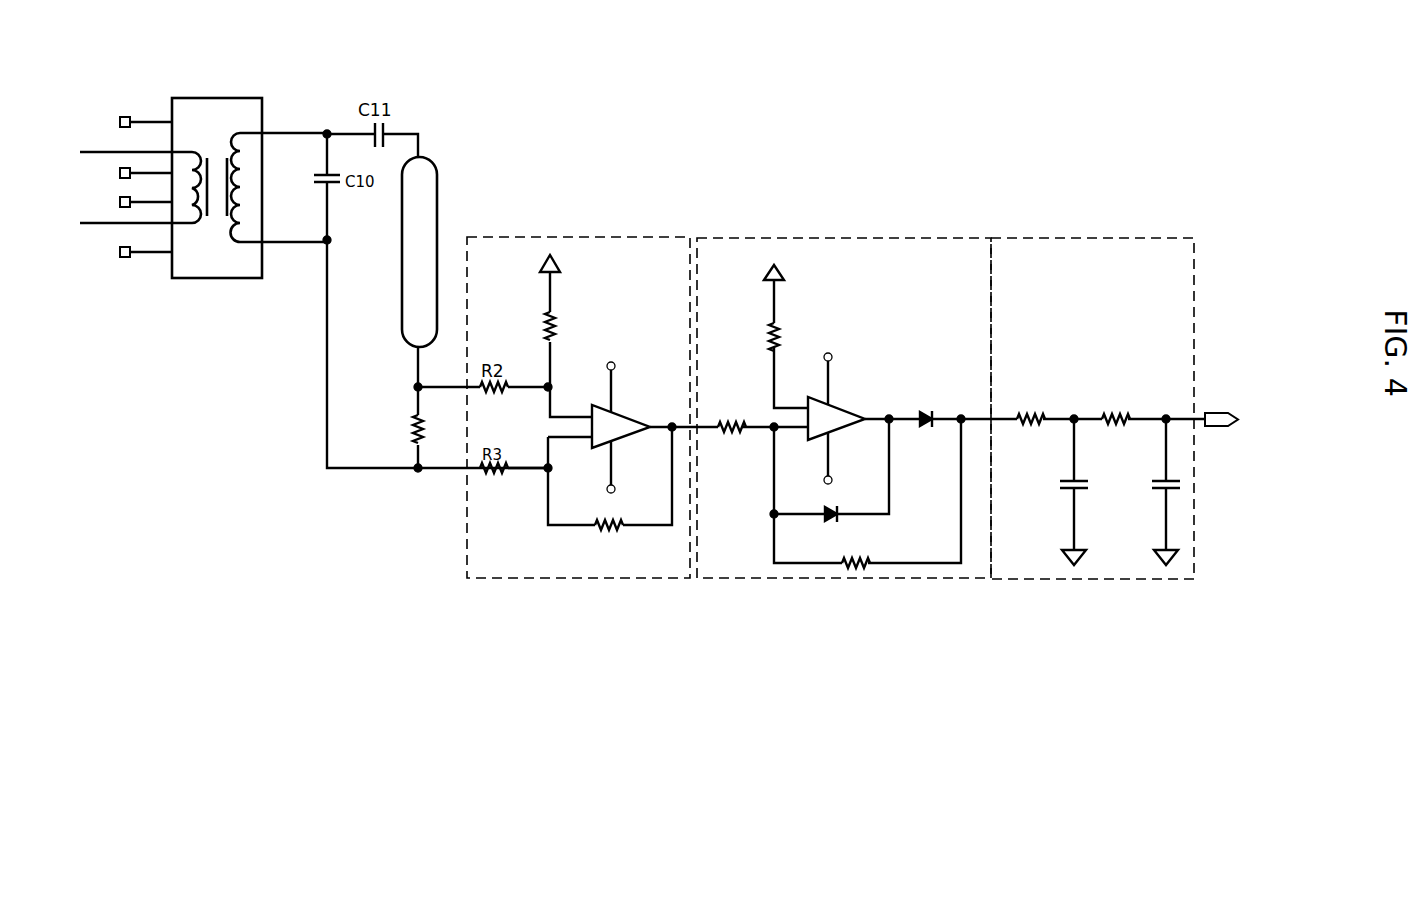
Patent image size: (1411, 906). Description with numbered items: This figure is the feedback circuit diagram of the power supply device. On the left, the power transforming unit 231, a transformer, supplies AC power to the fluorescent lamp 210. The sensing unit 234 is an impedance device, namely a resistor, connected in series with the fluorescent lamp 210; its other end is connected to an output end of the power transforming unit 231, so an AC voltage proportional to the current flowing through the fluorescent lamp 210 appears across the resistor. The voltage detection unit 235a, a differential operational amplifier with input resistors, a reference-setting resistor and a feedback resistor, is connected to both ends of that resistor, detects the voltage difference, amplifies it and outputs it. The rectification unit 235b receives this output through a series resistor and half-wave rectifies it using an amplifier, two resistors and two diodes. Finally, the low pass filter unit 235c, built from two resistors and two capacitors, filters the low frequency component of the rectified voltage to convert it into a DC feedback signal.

The power transforming unit 231 is at (213, 278).
The fluorescent lamp 210 is at (437, 178).
The sensing unit 234 is at (410, 447).
The voltage detection unit 235a is at (590, 238).
The rectification unit 235b is at (931, 239).
The low pass filter unit 235c is at (1028, 239).